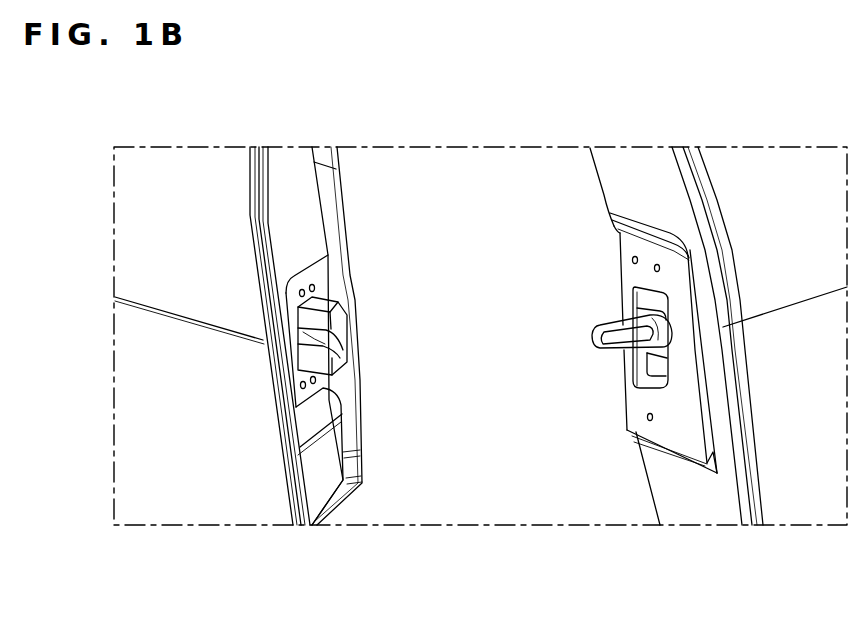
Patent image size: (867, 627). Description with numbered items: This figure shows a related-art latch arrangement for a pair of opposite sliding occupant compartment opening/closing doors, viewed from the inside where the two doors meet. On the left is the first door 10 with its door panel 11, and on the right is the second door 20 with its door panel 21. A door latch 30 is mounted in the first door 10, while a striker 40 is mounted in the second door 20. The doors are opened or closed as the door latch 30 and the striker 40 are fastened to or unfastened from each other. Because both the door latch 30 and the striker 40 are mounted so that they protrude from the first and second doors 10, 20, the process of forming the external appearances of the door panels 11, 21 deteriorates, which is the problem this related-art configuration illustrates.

The first door 10 is at (233, 490).
The door panel 11 is at (353, 407).
The second door 20 is at (793, 490).
The door panel 21 is at (642, 405).
The door latch 30 is at (333, 302).
The striker 40 is at (596, 332).